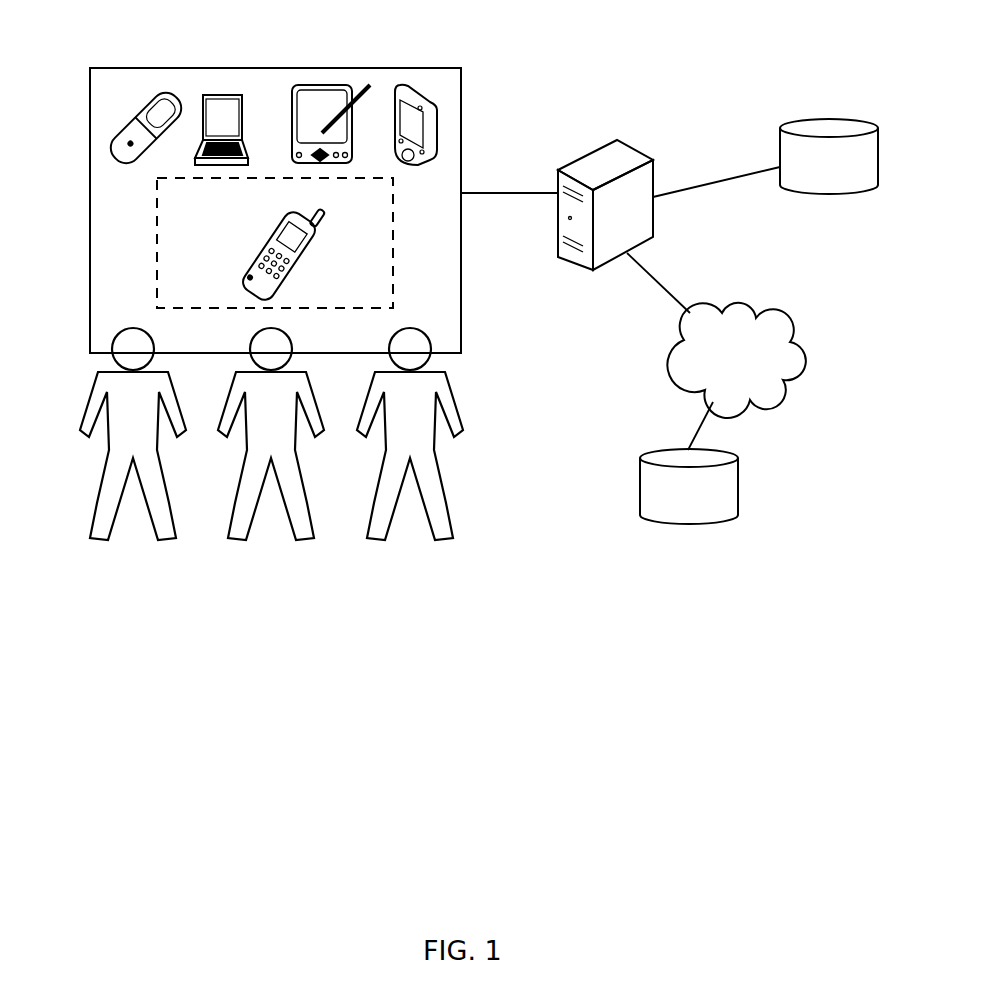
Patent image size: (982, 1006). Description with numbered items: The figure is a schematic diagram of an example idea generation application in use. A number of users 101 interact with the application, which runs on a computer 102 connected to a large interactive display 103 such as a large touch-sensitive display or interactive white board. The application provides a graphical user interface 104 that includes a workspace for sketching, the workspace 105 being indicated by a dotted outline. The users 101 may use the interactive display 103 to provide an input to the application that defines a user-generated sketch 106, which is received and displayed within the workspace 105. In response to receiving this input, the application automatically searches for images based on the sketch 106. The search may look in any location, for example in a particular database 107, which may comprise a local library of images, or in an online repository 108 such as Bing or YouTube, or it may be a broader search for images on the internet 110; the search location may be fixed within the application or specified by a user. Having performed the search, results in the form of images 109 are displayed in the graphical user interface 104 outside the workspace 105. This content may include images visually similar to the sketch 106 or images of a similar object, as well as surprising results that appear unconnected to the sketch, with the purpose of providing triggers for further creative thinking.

The users 101 is at (462, 453).
The computer 102 is at (655, 221).
The large interactive display 103 is at (379, 68).
The graphical user interface 104 is at (436, 190).
The workspace 105 is at (393, 248).
The user-generated sketch 106 is at (247, 263).
The database 107 is at (852, 119).
The online repository 108 is at (738, 485).
The images 109 is at (220, 90).
The internet 110 is at (791, 321).